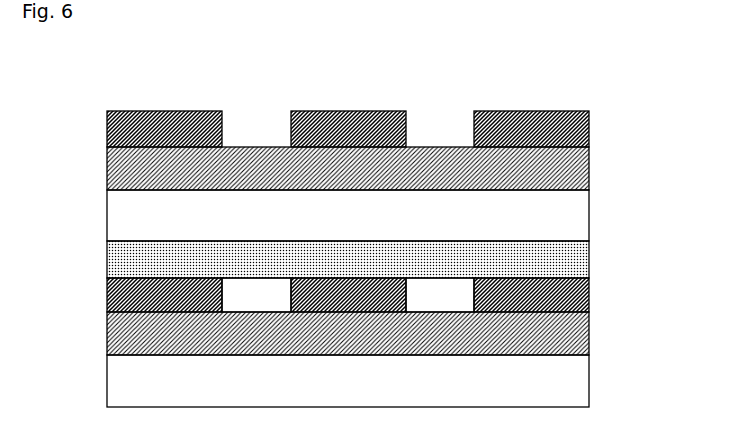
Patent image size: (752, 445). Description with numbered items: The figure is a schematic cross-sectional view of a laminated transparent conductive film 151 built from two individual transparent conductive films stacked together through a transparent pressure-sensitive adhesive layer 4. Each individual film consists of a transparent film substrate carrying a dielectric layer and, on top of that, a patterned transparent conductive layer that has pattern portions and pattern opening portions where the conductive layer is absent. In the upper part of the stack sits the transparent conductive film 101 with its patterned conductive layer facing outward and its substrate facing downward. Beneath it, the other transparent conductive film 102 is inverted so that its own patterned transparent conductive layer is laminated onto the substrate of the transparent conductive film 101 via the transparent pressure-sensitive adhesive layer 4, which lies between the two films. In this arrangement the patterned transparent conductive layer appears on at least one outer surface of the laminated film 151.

The transparent conductive film 151 is at (422, 221).
The transparent conductive film 101 is at (422, 176).
The transparent conductive film 102 is at (422, 342).
The transparent pressure-sensitive adhesive layer 4 is at (583, 257).